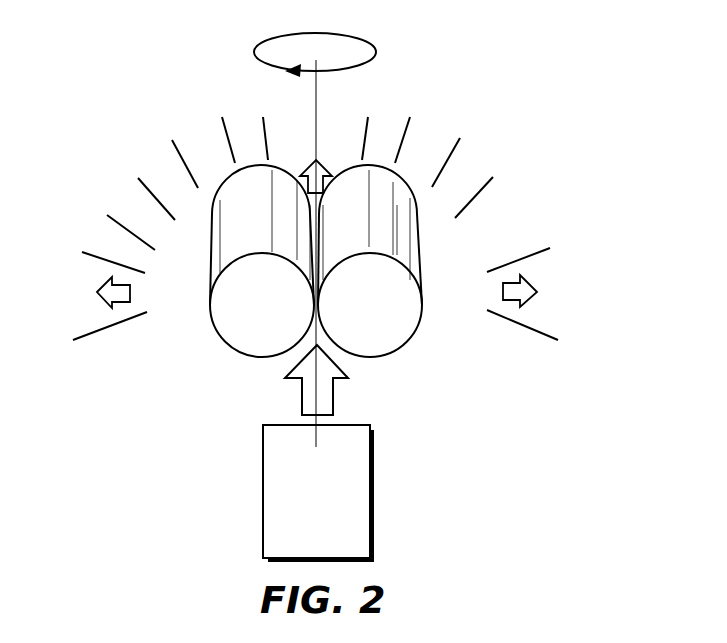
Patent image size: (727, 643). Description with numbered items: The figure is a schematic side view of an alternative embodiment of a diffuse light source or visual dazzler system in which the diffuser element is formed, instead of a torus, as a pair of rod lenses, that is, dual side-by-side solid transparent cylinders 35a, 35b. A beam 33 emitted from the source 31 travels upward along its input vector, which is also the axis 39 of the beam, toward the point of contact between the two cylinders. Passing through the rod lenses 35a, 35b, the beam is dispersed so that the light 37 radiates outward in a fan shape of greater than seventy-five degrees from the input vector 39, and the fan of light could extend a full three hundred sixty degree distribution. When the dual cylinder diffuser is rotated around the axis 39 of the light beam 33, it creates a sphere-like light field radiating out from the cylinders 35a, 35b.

The source 31 is at (373, 488).
The beam 33 is at (333, 408).
The rod lens 35a is at (257, 358).
The rod lens 35b is at (405, 345).
The light 37 is at (153, 193).
The axis 39 is at (318, 117).